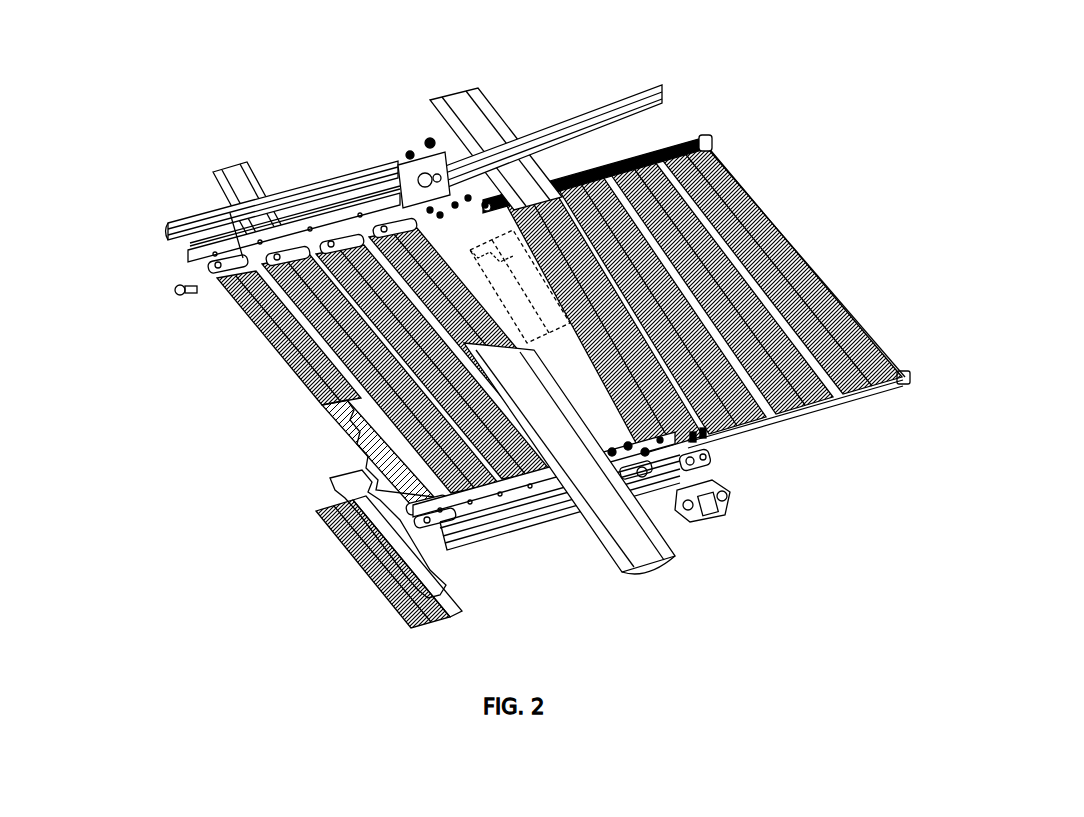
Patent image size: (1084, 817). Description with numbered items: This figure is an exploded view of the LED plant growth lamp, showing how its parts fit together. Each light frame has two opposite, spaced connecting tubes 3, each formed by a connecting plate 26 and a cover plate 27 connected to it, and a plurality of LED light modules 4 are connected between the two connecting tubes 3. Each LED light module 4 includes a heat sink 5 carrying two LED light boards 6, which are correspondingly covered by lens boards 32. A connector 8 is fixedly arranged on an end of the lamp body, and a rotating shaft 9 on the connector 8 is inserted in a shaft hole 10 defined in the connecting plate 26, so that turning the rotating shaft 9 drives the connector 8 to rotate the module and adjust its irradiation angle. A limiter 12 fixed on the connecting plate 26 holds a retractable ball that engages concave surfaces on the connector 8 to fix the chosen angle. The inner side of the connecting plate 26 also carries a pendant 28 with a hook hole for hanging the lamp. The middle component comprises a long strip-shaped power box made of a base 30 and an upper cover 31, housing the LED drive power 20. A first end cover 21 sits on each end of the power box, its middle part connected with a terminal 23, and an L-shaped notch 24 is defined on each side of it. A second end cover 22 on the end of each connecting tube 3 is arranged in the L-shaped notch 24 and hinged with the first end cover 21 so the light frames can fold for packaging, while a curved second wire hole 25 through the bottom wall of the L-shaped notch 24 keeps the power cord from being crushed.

The connecting tube 3 is at (850, 407).
The LED light module 4 is at (803, 263).
The heat sink 5 is at (235, 180).
The LED light board 6 is at (347, 430).
The connector 8 is at (210, 265).
The rotating shaft 9 is at (215, 275).
The shaft hole 10 is at (210, 237).
The limiter 12 is at (477, 540).
The LED drive power 20 is at (540, 157).
The first end cover 21 is at (717, 520).
The second end cover 22 is at (707, 465).
The terminal 23 is at (407, 153).
The L-shaped notch 24 is at (430, 140).
The second wire hole 25 is at (730, 503).
The connecting plate 26 is at (345, 212).
The cover plate 27 is at (168, 228).
The pendant 28 is at (800, 407).
The base 30 is at (650, 560).
The upper cover 31 is at (457, 107).
The lens board 32 is at (283, 363).